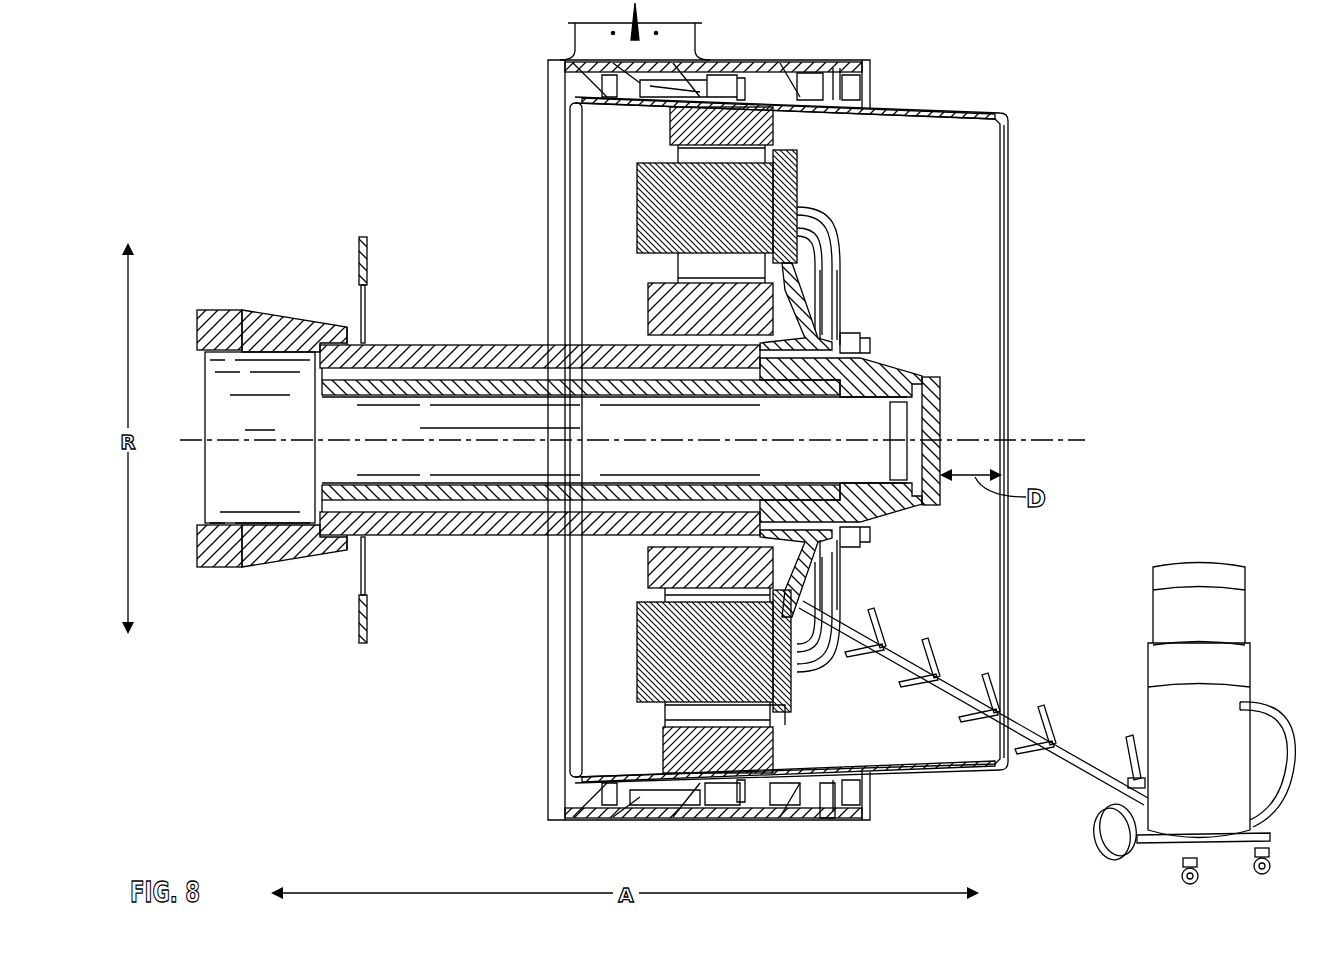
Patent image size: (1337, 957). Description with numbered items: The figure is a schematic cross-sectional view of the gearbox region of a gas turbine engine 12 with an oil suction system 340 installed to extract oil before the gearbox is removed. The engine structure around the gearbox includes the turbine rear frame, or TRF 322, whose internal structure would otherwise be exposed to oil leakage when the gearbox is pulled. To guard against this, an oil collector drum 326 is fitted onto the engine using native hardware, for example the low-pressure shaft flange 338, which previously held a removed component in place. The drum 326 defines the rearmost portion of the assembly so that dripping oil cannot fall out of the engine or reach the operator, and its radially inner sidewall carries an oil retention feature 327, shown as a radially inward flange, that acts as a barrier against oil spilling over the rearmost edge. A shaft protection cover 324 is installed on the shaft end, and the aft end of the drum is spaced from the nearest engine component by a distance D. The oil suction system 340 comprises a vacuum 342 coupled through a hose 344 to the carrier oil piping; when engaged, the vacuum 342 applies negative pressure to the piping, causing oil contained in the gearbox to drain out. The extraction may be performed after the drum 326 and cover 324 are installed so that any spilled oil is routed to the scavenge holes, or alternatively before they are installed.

The rotary shaft axis 12 is at (1037, 442).
The TRF 322 is at (575, 45).
The shaft protection cover 324 is at (930, 410).
The oil collector drum 326 is at (965, 250).
The oil retention feature 327 is at (1000, 342).
The low-pressure shaft flange 338 is at (737, 800).
The oil suction system 340 is at (1237, 530).
The vacuum 342 is at (1175, 810).
The hose 344 is at (952, 690).